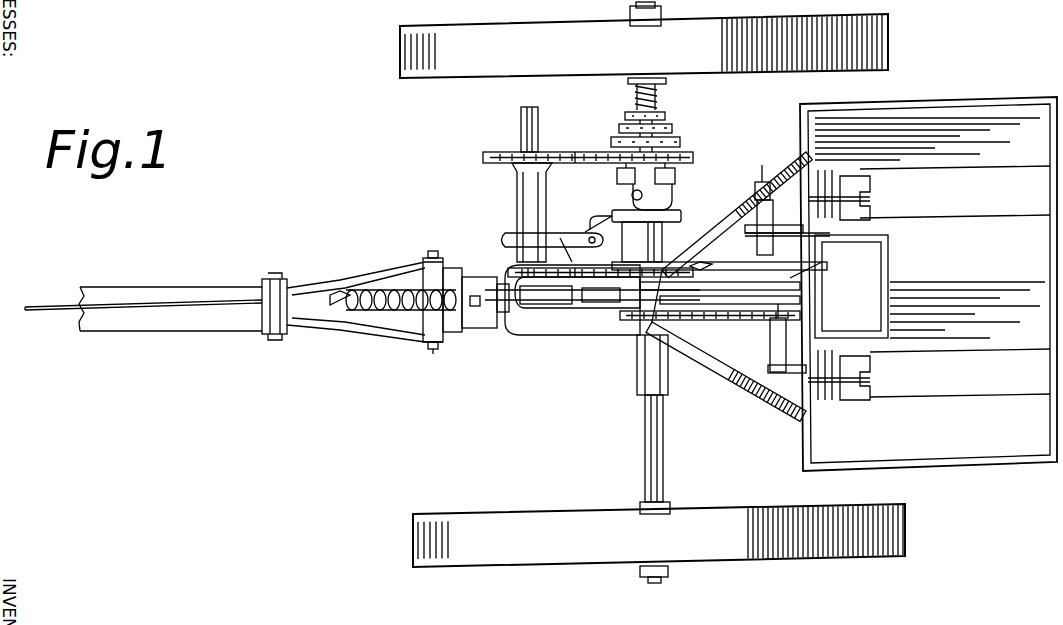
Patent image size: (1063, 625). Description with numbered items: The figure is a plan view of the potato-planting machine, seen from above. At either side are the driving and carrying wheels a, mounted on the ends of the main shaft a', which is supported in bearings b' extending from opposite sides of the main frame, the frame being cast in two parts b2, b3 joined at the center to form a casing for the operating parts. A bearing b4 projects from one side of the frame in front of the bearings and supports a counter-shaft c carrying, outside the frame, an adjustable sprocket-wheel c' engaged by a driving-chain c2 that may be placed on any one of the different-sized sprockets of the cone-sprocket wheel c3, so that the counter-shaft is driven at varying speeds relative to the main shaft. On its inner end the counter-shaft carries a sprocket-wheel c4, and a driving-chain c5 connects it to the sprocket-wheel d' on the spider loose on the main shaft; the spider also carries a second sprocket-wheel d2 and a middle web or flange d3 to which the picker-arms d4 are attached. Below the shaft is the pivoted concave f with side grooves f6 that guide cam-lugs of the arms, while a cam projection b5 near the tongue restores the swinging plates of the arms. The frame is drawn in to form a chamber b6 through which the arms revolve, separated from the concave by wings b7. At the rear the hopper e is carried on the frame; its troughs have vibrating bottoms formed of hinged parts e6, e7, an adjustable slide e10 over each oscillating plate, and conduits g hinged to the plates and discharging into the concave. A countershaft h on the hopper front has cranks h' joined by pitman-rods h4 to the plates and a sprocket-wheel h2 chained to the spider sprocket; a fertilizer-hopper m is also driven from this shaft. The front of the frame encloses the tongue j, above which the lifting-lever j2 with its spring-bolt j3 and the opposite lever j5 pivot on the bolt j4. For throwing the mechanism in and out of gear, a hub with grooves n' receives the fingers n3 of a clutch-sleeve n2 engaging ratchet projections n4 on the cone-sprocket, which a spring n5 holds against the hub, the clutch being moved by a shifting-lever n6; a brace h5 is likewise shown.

The driving and carrying wheels a is at (652, 292).
The main shaft a' is at (634, 448).
The bearings b' is at (634, 365).
The frame part b2 is at (508, 268).
The frame part b3 is at (556, 336).
The bearing b4 is at (518, 197).
The cam projection b5 is at (492, 312).
The chamber b6 is at (590, 305).
The laterally-extending wings b7 is at (573, 242).
The counter-shaft c is at (493, 129).
The adjustable sprocket-wheel c' is at (571, 157).
The driving-chain c2 is at (578, 152).
The cone-sprocket wheel c3 is at (658, 132).
The sprocket-wheel c4 is at (525, 260).
The driving-chain c5 is at (569, 260).
The sprocket-wheel d' is at (719, 246).
The sprocket-wheel d2 is at (654, 312).
The web or flange d3 is at (630, 308).
The arms d4 is at (538, 302).
The hopper e is at (928, 273).
The vibrating bottom part e6 is at (955, 281).
The oscillating plate e7 is at (845, 178).
The slide e10 is at (826, 172).
The concave f is at (692, 259).
The groove f6 is at (817, 261).
The conduit g is at (772, 295).
The countershaft h is at (774, 222).
The cranks h' is at (729, 291).
The sprocket-wheel h2 is at (775, 335).
The pitman-rods h4 is at (855, 198).
The brace connection h5 is at (715, 340).
The tongue j is at (205, 331).
The lifting-lever j2 is at (172, 300).
The spring-bolt j3 is at (338, 292).
The bolt j4 is at (433, 349).
The lever j5 is at (402, 332).
The fertilizer-hopper m is at (851, 286).
The grooves n' is at (626, 175).
The clutch-sleeve n2 is at (681, 205).
The fingers n3 is at (605, 214).
The ratchet projections n4 is at (680, 170).
The spring n5 is at (658, 104).
The shifting-lever n6 is at (505, 238).